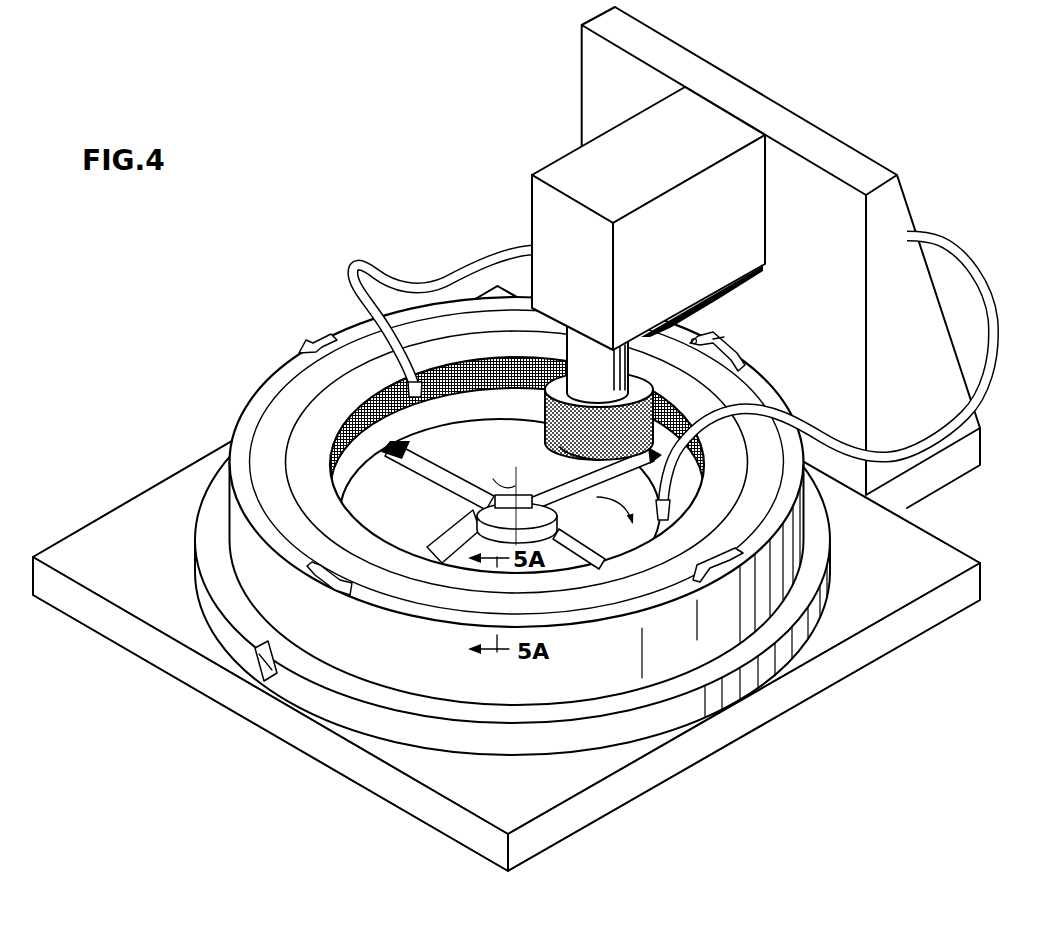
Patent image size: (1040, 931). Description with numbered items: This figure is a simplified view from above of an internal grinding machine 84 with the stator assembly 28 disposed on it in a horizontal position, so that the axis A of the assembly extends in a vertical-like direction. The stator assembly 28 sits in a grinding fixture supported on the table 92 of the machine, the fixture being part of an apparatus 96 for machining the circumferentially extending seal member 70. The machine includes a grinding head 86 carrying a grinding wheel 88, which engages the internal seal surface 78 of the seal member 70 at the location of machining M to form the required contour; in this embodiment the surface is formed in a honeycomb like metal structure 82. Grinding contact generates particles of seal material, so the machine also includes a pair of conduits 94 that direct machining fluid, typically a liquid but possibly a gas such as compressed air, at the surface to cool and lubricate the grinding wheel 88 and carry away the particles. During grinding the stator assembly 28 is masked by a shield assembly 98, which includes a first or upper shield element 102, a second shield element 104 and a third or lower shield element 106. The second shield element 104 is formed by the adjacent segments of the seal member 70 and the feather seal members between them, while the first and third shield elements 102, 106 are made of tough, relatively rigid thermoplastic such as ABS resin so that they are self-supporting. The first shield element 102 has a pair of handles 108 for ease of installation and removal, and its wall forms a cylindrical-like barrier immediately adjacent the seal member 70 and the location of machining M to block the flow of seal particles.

The internal grinding machine 84 is at (779, 96).
The grinding head 86 is at (655, 372).
The honeycomb like metal structure 82 is at (510, 383).
The grinding wheel 88 is at (578, 452).
The internal seal surface 78 is at (384, 458).
The table 92 is at (446, 537).
The stator assembly 28 is at (602, 512).
The seal member 70 is at (459, 392).
The shield assembly 98 is at (247, 371).
The first shield element 102 is at (278, 436).
The second shield element 104 is at (379, 449).
The third shield element 106 is at (412, 403).
The apparatus 96 is at (238, 531).
The handles 108 is at (315, 332).
The conduits 94 is at (481, 271).
The location of machining M is at (720, 341).
The axis A is at (501, 503).